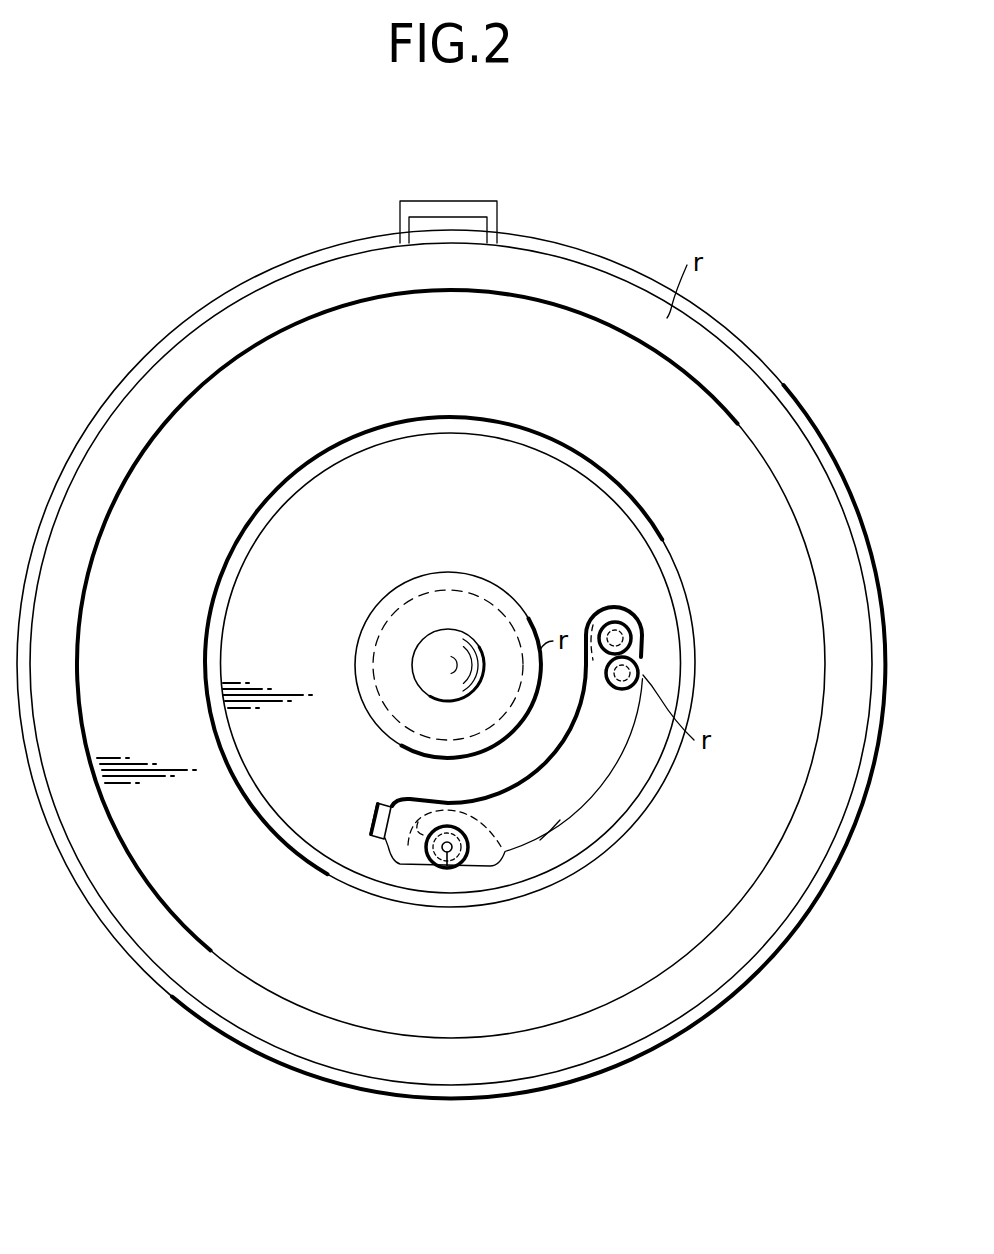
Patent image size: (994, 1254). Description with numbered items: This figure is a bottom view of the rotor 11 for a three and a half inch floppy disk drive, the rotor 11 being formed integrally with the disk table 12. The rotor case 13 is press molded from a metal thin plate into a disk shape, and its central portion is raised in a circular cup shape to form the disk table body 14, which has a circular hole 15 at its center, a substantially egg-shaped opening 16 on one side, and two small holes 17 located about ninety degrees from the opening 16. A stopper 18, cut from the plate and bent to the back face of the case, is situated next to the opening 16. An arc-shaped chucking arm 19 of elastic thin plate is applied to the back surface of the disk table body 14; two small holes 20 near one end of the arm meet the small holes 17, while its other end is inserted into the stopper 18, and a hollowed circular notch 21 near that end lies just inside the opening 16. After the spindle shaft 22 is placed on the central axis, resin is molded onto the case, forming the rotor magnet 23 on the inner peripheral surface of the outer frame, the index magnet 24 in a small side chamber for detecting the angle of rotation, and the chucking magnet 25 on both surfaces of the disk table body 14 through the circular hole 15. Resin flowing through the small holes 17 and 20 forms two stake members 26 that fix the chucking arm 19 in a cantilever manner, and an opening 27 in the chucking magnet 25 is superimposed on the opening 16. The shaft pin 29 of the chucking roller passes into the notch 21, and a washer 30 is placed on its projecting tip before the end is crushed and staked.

The rotor 11 is at (782, 369).
The disk table 12 is at (558, 436).
The rotor case 13 is at (822, 433).
The disk table body 14 is at (614, 480).
The circular hole 15 is at (474, 592).
The opening 16 is at (455, 804).
The small holes 17 is at (514, 717).
The stopper 18 is at (372, 838).
The chucking arm 19 is at (565, 830).
The small holes 20 is at (592, 617).
The notch 21 is at (460, 880).
The spindle shaft 22 is at (412, 665).
The rotor magnet 23 is at (587, 290).
The index magnet 24 is at (413, 200).
The chucking magnet 25 is at (405, 586).
The stake members 26 is at (639, 664).
The opening 27 is at (434, 798).
The shaft pin 29 is at (446, 866).
The washer 30 is at (453, 866).